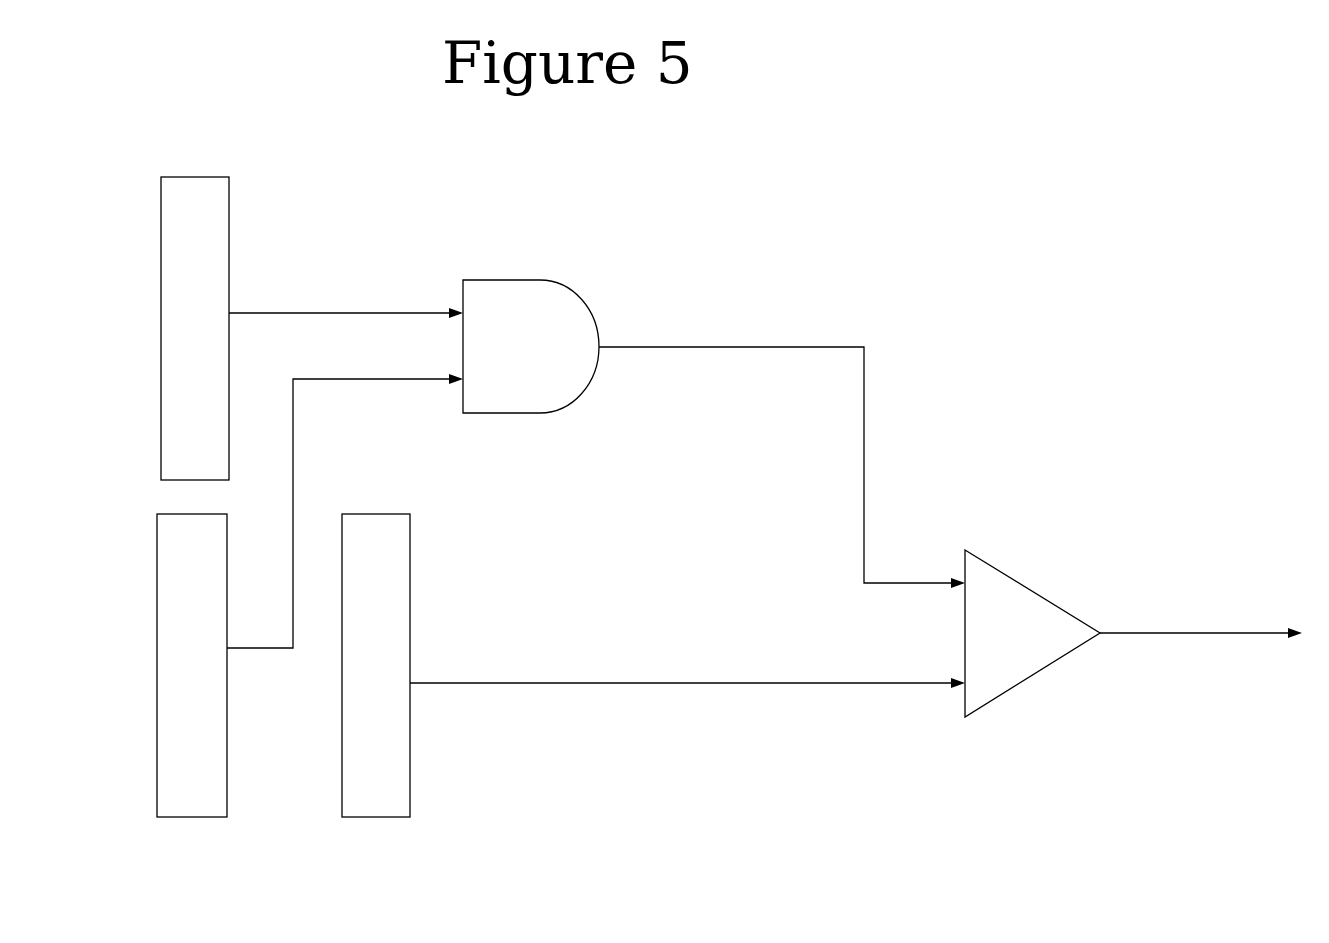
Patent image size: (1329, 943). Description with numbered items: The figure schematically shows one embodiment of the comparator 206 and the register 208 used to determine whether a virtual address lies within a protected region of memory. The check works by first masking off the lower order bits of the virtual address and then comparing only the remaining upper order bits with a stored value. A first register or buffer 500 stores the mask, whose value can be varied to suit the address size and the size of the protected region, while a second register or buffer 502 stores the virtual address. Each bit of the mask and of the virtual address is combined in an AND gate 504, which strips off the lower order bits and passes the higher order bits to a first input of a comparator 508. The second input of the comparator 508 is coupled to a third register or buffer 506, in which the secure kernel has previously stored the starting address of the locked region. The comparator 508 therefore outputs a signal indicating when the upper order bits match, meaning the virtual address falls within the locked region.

The first register or buffer 500 is at (229, 243).
The second register or buffer 502 is at (227, 581).
The AND gate 504 is at (714, 434).
The third register or buffer 506 is at (412, 547).
The comparator 508 is at (1052, 600).
The register 208 is at (348, 183).
The comparator 206 is at (994, 268).